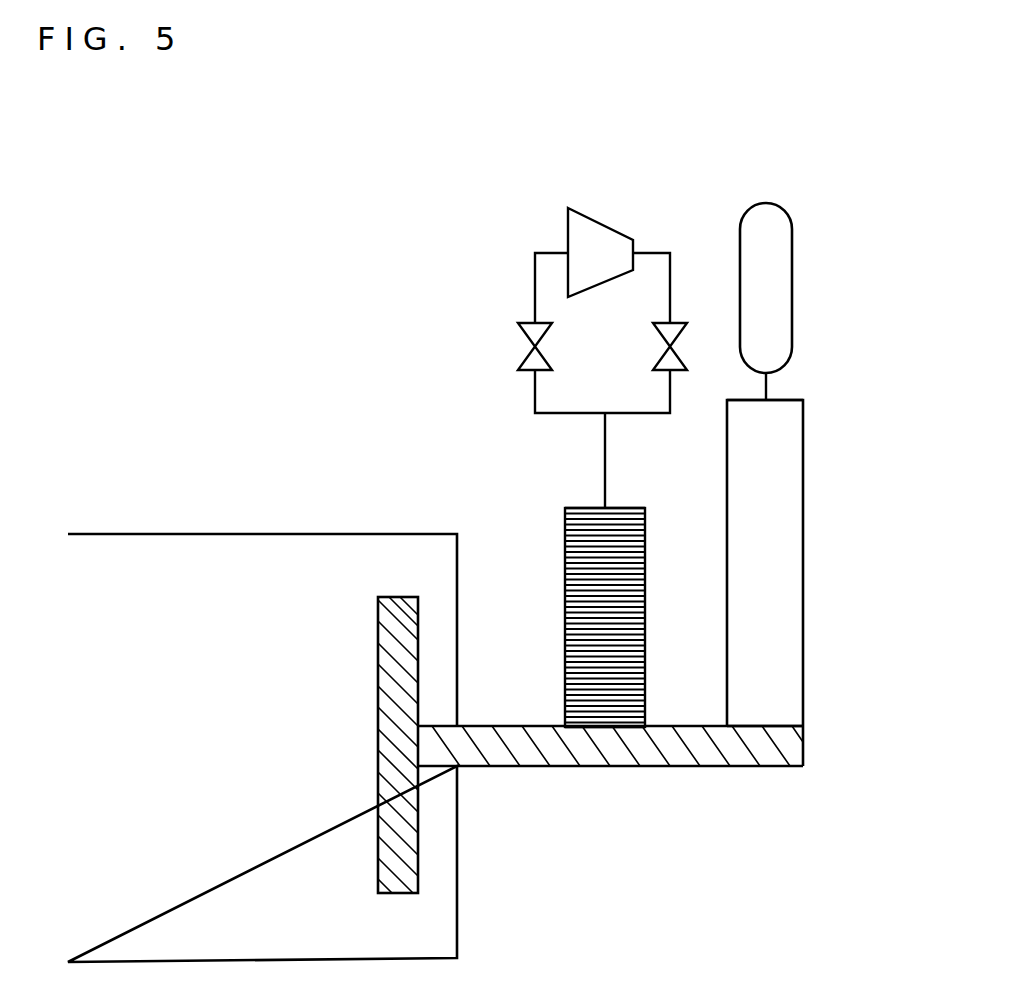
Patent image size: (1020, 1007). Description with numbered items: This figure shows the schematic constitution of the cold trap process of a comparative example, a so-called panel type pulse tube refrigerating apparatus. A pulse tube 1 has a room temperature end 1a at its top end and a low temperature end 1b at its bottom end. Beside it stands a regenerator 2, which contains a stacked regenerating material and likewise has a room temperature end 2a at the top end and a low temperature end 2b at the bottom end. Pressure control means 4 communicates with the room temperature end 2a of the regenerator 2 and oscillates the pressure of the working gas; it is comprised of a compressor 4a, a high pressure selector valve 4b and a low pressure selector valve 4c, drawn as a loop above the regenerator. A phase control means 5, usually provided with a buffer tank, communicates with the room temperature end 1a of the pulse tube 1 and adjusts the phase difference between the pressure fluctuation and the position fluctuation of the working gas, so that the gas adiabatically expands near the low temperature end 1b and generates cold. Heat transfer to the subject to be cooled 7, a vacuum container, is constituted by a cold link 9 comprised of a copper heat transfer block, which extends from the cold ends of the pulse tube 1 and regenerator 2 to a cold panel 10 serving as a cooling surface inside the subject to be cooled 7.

The pulse tube 1 is at (785, 543).
The room temperature end of the pulse tube 1a is at (792, 420).
The low temperature end of the pulse tube 1b is at (787, 715).
The regenerator 2 is at (568, 617).
The room temperature end of the regenerator 2a is at (567, 522).
The low temperature end of the regenerator 2b is at (567, 713).
The pressure control means 4 is at (586, 287).
The compressor 4a is at (610, 245).
The high pressure selector valve 4b is at (677, 325).
The low pressure selector valve 4c is at (532, 337).
The phase control means 5 is at (772, 278).
The subject to be cooled 7 is at (250, 548).
The cold link 9 is at (508, 752).
The cold panel 10 is at (408, 843).